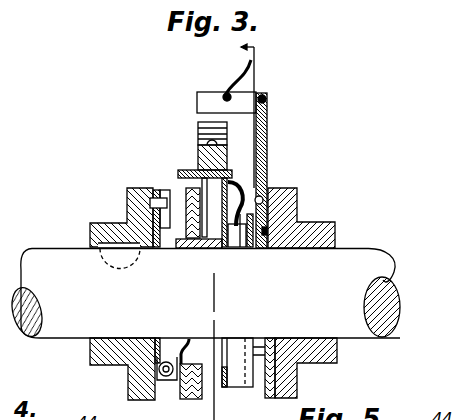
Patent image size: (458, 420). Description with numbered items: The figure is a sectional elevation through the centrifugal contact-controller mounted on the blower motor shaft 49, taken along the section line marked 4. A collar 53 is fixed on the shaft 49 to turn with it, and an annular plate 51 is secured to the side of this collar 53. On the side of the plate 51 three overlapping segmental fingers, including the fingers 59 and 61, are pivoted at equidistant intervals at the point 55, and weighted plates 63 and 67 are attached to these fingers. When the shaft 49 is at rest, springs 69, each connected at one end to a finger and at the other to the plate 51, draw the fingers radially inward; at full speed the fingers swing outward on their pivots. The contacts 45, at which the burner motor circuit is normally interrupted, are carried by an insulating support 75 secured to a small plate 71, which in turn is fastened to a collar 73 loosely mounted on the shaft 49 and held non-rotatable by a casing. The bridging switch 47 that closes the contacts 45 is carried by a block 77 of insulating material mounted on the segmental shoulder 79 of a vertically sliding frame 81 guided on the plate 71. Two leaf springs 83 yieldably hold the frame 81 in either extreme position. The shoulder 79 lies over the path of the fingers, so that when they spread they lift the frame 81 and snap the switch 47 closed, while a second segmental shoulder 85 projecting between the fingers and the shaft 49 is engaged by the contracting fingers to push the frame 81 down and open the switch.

The section line 4- 4 is at (234, 229).
The contacts 45 is at (214, 93).
The bridging switch 47 is at (198, 133).
The blower motor shaft 49 is at (367, 250).
The annular plate 51 is at (123, 223).
The collar 53 is at (90, 232).
The pivot point 55 is at (163, 196).
The segmental finger 59 is at (186, 190).
The segmental finger 61 is at (194, 398).
The weighted plate 63 is at (214, 249).
The weighted plate 67 is at (203, 386).
The springs 69 is at (165, 381).
The plate or frame 71 is at (297, 378).
The collar 73 is at (288, 207).
The insulating support 75 is at (268, 126).
The block of insulating material 77 is at (199, 153).
The segmental shoulder 79 is at (228, 178).
The vertically sliding frame 81 is at (242, 190).
The leaf springs 83 is at (243, 199).
The second segmental shoulder 85 is at (188, 247).